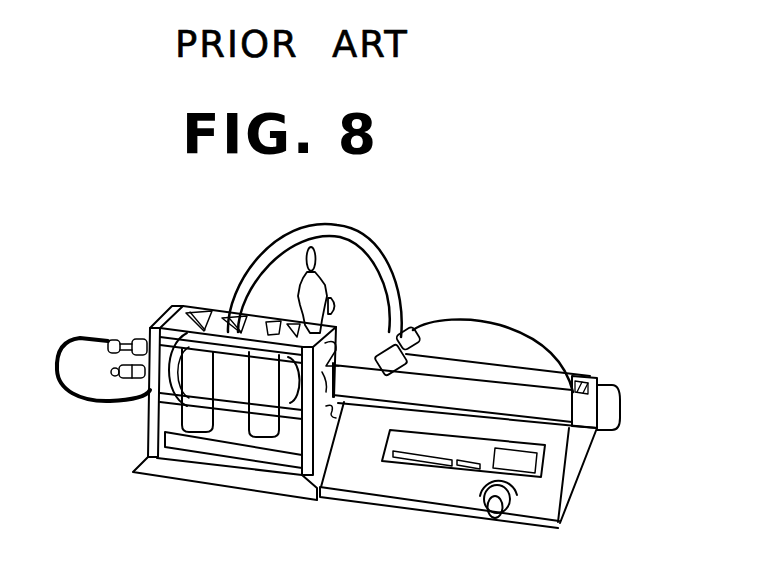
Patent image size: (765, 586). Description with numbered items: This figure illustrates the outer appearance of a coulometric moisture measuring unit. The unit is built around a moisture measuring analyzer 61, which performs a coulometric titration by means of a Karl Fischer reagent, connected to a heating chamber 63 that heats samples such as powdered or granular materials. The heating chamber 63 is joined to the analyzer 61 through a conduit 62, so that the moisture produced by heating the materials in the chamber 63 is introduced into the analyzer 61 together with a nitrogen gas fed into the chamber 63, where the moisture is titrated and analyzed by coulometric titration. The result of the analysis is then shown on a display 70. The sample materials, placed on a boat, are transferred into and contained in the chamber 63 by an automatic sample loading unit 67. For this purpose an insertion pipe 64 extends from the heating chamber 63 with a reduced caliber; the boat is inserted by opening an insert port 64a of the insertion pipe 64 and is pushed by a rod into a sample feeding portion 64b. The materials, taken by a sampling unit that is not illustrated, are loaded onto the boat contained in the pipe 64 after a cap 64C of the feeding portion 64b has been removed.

The moisture measuring analyzer 61 is at (318, 300).
The conduit 62 is at (367, 228).
The heating chamber 63 is at (208, 357).
The insertion pipe 64 is at (557, 396).
The insert port 64a is at (604, 417).
The sample feeding portion 64b is at (374, 388).
The cap 64C is at (418, 323).
The automatic sample loading unit 67 is at (415, 482).
The display 70 is at (530, 458).